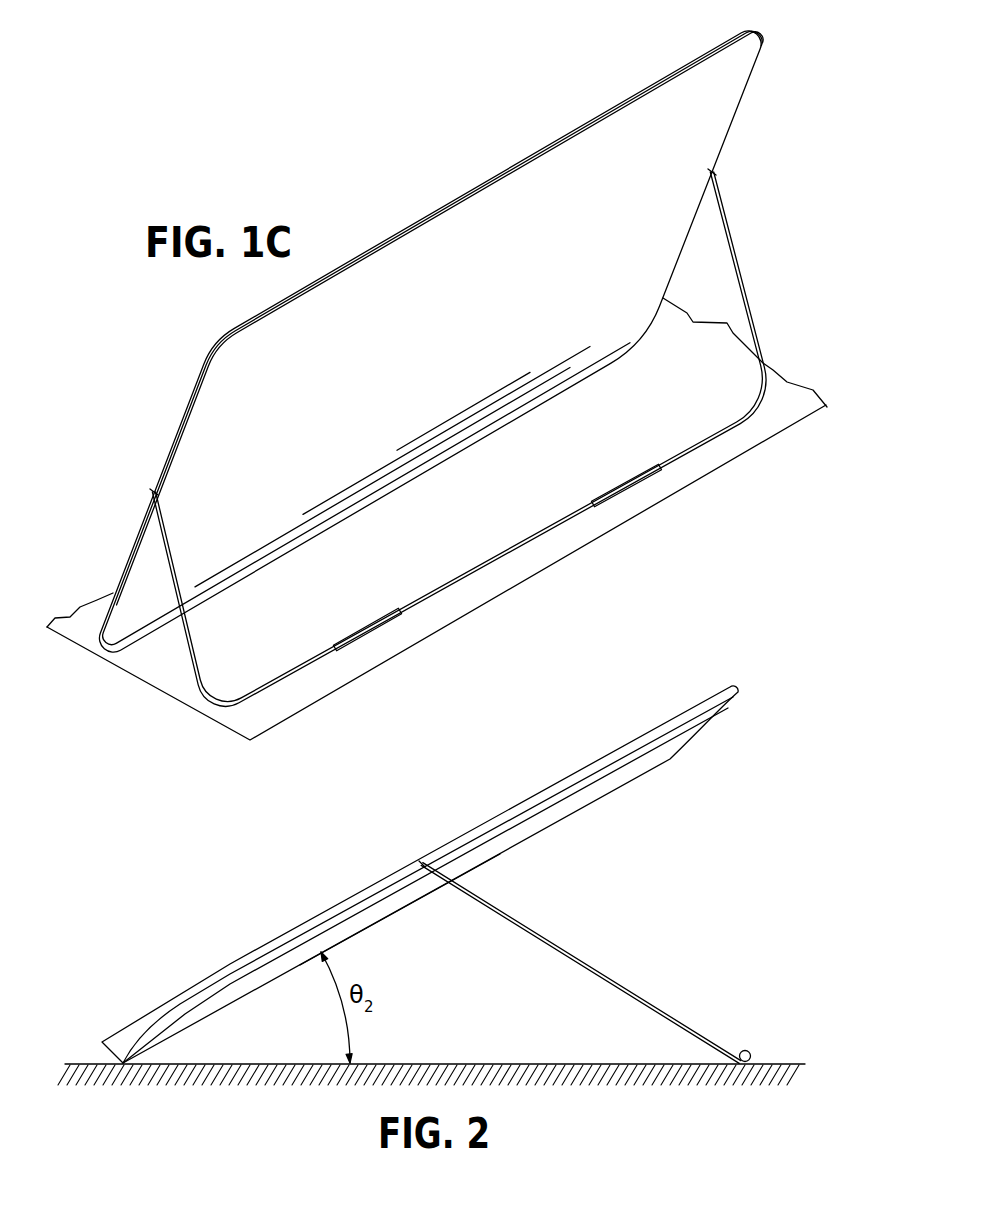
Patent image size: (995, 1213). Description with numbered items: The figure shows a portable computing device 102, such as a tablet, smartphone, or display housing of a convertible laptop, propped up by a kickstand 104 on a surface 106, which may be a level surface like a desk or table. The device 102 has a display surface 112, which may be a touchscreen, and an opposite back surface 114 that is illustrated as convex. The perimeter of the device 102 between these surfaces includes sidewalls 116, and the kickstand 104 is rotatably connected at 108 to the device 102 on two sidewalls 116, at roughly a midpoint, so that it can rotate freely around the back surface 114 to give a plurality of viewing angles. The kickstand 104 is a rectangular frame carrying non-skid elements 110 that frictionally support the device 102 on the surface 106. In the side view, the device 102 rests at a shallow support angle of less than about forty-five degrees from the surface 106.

In FIG. 1C, the portable computing device 102 is at (393, 237).
In FIG. 2, the portable computing device 102 is at (344, 905).
In FIG. 1C, the kickstand 104 is at (497, 557).
In FIG. 2, the kickstand 104 is at (590, 965).
In FIG. 1C, the surface 106 is at (165, 693).
In FIG. 2, the surface 106 is at (532, 1063).
In FIG. 1C, the rotatable connection 108 is at (711, 172).
In FIG. 2, the rotatable connection 108 is at (421, 860).
In FIG. 1C, the non-skid element 110 is at (622, 486).
In FIG. 2, the non-skid element 110 is at (746, 1050).
In FIG. 2, the display surface 112 is at (523, 803).
In FIG. 1C, the back surface 114 is at (437, 357).
In FIG. 2, the back surface 114 is at (540, 831).
In FIG. 1C, the sidewall 116 is at (741, 100).